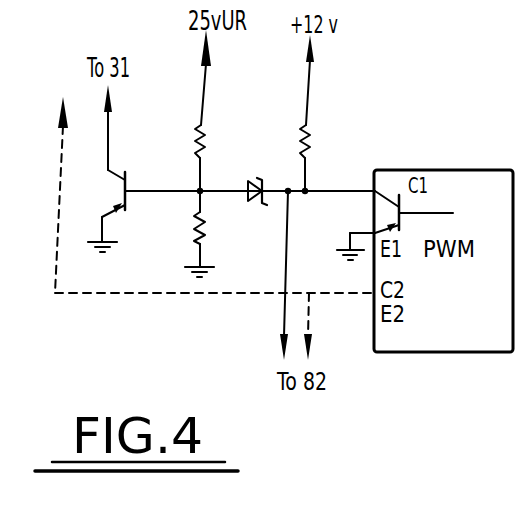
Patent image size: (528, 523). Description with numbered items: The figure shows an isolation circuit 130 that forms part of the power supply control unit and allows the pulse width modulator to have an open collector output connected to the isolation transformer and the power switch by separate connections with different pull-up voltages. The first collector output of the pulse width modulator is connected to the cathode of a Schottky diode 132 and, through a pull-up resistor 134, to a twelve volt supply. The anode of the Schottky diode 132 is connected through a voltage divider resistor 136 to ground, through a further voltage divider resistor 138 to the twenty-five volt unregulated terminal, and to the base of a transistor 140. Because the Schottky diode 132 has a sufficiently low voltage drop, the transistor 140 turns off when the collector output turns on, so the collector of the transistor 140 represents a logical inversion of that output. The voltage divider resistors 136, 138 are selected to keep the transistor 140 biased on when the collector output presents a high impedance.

The isolation circuit 130 is at (136, 327).
The Schottky diode 132 is at (260, 206).
The pull-up resistor 134 is at (313, 148).
The voltage divider resistor 136 is at (192, 234).
The voltage divider resistor 138 is at (208, 148).
The transistor 140 is at (128, 182).